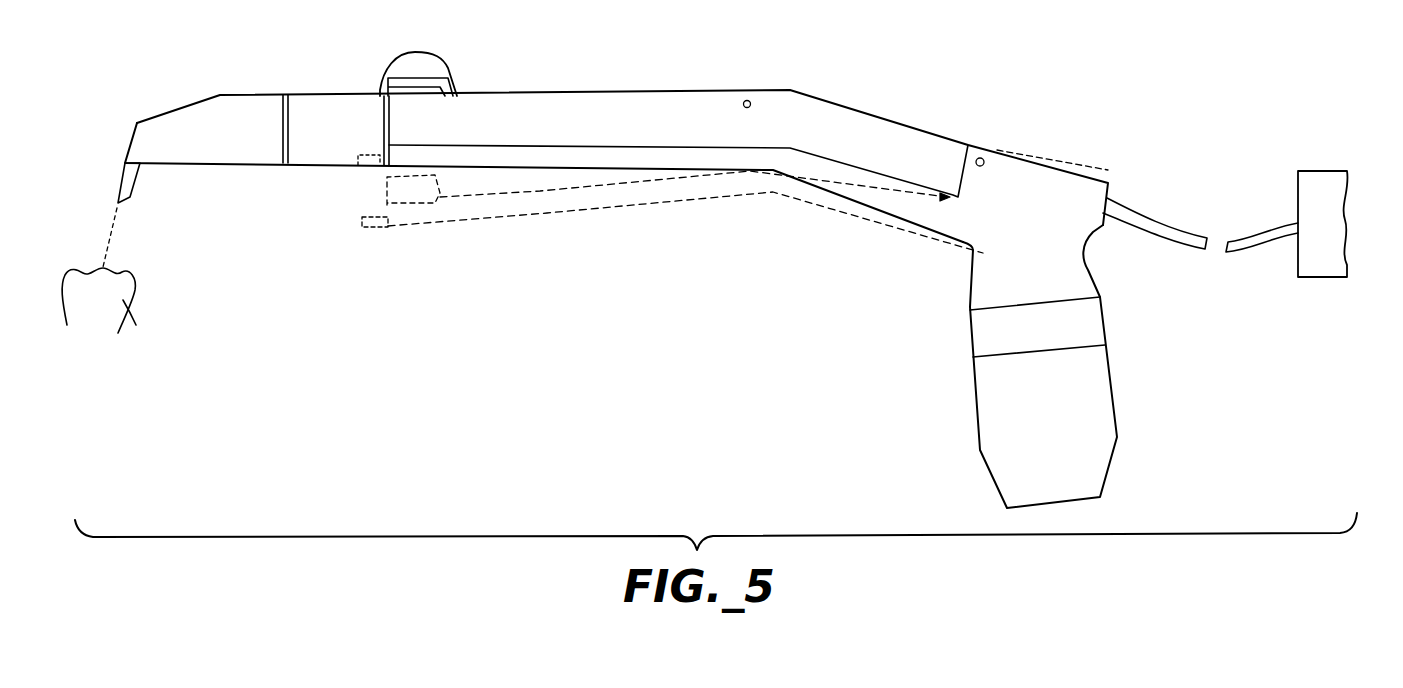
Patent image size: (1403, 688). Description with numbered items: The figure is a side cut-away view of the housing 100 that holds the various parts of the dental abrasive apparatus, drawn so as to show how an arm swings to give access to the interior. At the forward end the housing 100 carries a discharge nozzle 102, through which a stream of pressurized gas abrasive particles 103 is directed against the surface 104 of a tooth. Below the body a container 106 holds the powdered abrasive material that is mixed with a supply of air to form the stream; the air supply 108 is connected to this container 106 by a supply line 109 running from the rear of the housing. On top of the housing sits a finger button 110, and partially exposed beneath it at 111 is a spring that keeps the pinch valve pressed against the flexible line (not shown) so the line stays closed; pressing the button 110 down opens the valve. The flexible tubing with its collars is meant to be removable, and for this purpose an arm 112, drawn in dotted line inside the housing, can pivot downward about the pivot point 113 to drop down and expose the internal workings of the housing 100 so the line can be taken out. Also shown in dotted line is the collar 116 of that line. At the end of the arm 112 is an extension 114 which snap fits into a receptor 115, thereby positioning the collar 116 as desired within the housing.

The housing 100 is at (624, 42).
The discharge nozzle 102 is at (133, 196).
The stream of pressurized gas abrasive particles 103 is at (115, 233).
The surface of a tooth 104 is at (128, 307).
The container 106 is at (1112, 377).
The air supply 108 is at (1312, 170).
The supply line 109 is at (1127, 203).
The finger button 110 is at (438, 53).
The spring 111 is at (385, 93).
The arm 112 is at (545, 220).
The pivot point 113 is at (985, 157).
The extension 114 is at (372, 230).
The receptor 115 is at (365, 168).
The collar 116 is at (387, 190).